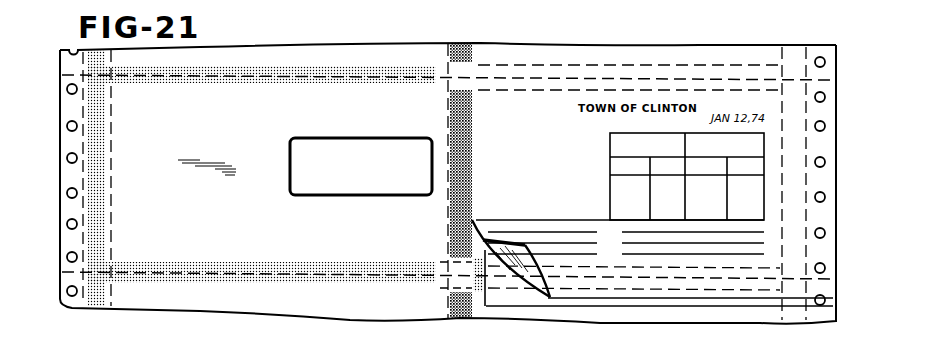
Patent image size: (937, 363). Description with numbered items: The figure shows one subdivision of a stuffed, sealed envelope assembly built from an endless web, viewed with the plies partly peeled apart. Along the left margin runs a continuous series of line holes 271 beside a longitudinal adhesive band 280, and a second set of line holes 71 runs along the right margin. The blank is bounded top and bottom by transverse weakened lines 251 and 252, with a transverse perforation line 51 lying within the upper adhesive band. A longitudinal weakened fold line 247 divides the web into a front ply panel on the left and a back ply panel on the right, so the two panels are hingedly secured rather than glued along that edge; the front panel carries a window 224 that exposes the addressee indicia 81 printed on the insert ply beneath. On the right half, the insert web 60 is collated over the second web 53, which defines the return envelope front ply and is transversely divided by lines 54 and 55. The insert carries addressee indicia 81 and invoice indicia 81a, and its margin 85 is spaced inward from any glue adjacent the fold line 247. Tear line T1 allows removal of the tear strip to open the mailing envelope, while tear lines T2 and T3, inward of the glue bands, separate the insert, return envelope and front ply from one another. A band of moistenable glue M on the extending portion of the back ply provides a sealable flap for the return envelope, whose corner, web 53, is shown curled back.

The transverse perforation line 51 is at (124, 78).
The adhesive band 280 is at (86, 138).
The tear line T1 is at (112, 174).
The line holes 271 is at (68, 189).
The transverse weakened line 251 is at (282, 79).
The window 224 is at (372, 137).
The margin 85 is at (478, 50).
The transverse line 54 is at (573, 78).
The tear line T2 is at (557, 90).
The addressee indicia 81 is at (534, 152).
The invoice indicia 81a is at (609, 178).
The line holes 71 is at (824, 124).
The insert web 60 is at (791, 222).
The tear line T3 is at (776, 268).
The transverse line 55 is at (830, 276).
The longitudinal weakened fold line 247 is at (447, 208).
The band of moistenable glue M is at (450, 232).
The second endless web 53 is at (531, 302).
The transverse weakened line 252 is at (257, 272).